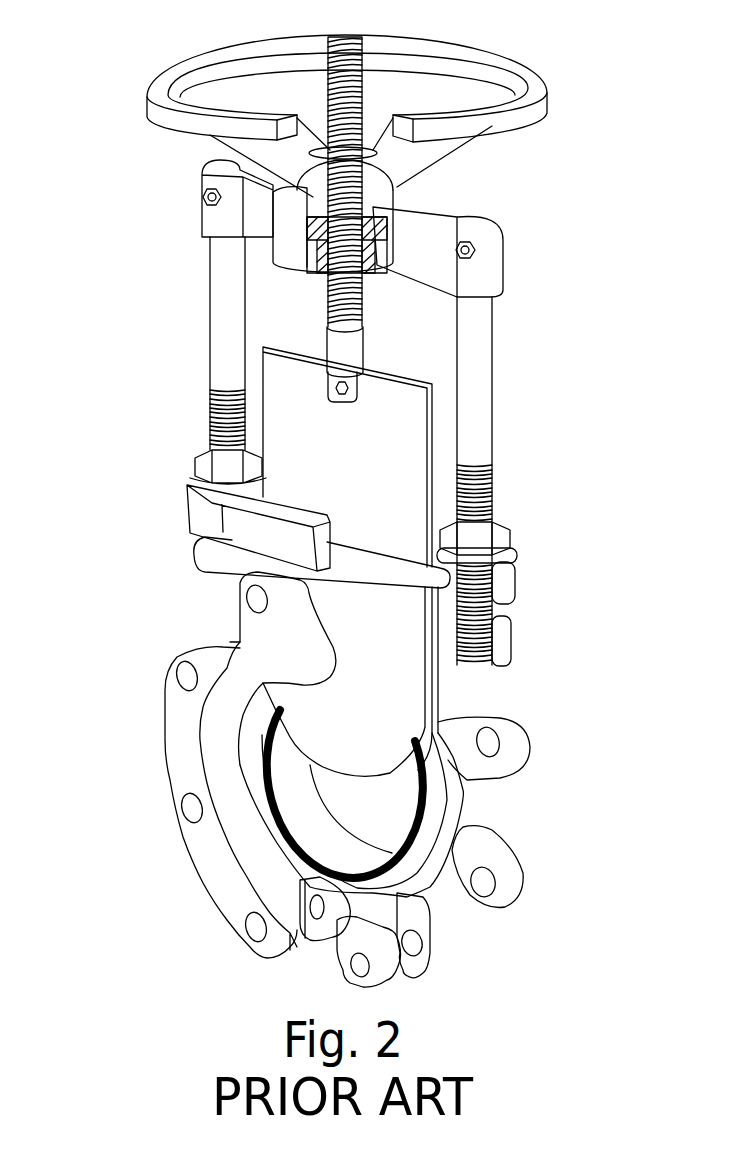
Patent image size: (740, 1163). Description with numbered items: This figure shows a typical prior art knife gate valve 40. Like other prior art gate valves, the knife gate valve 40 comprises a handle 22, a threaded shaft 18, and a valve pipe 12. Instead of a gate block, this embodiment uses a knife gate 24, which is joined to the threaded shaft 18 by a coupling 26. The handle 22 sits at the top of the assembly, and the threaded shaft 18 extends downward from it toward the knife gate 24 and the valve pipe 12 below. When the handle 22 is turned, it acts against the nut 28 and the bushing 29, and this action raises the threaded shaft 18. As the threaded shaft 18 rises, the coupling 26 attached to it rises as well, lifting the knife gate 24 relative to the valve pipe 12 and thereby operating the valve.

The knife gate valve 40 is at (36, 15).
The handle 22 is at (150, 104).
The nut 28 is at (383, 200).
The bushing 29 is at (373, 247).
The threaded shaft 18 is at (363, 305).
The coupling 26 is at (380, 448).
The knife gate 24 is at (393, 700).
The valve pipe 12 is at (270, 792).